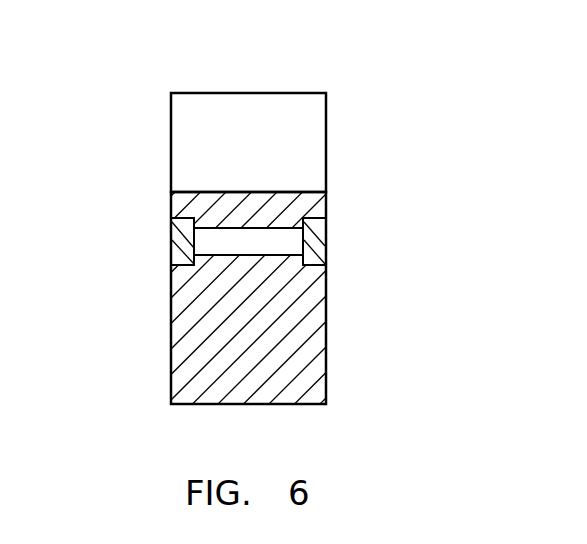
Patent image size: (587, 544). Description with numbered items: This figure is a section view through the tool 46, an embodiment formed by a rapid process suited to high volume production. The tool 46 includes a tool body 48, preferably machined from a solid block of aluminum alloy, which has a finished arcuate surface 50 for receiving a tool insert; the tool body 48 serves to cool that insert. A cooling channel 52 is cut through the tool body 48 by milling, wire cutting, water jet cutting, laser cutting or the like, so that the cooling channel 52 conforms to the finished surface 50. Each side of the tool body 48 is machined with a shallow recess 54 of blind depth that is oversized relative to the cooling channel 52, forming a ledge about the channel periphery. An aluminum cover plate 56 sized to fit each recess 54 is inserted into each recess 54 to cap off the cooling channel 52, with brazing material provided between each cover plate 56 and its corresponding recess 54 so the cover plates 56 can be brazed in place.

The tool 46 is at (362, 77).
The tool body 48 is at (172, 338).
The finished arcuate surface 50 is at (233, 117).
The cooling channel 52 is at (257, 229).
The shallow recess 54 is at (178, 224).
The cover plate 56 is at (313, 240).